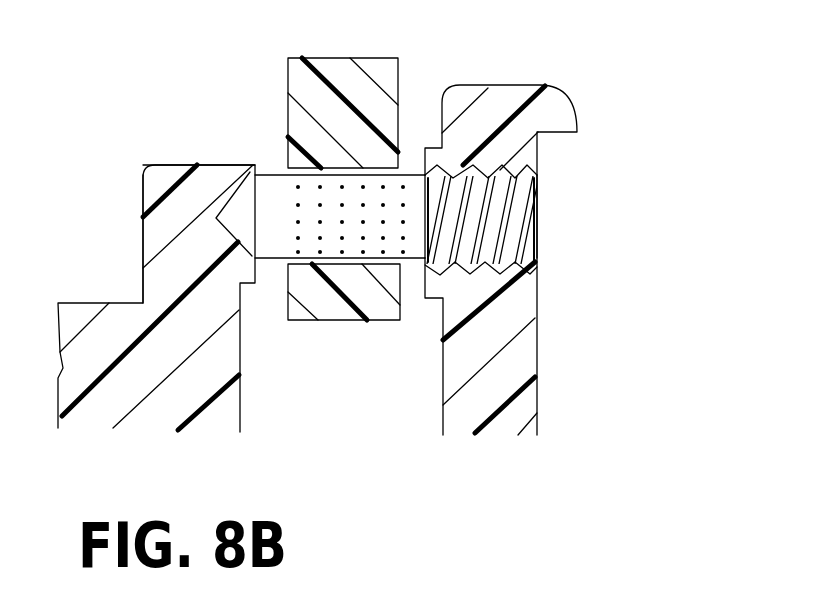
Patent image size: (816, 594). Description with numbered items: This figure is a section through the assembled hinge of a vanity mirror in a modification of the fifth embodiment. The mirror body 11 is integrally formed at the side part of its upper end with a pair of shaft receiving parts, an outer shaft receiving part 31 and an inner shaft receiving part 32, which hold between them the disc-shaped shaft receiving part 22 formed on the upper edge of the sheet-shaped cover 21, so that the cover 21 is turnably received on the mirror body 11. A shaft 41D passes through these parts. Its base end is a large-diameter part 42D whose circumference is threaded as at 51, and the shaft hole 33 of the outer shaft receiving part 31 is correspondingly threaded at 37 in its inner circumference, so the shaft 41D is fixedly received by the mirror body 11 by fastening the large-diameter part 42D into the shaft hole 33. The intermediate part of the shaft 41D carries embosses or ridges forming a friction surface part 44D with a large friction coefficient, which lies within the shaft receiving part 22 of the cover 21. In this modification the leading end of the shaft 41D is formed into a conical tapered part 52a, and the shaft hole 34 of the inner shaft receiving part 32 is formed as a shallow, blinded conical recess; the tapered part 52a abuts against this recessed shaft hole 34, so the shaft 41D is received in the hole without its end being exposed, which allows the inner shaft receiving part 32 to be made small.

The mirror body 11 is at (522, 413).
The cover 21 is at (360, 78).
The shaft receiving part 22 is at (318, 140).
The outer shaft receiving part 31 is at (540, 108).
The inner shaft receiving part 32 is at (172, 287).
The shaft hole 33 is at (467, 263).
The shaft hole 34 is at (187, 237).
The thread 37 is at (502, 183).
The shaft 41D is at (537, 215).
The large-diameter part 42D is at (460, 243).
The friction surface part 44D is at (358, 232).
The thread 51 is at (500, 224).
The conical tapered part 52a is at (240, 215).